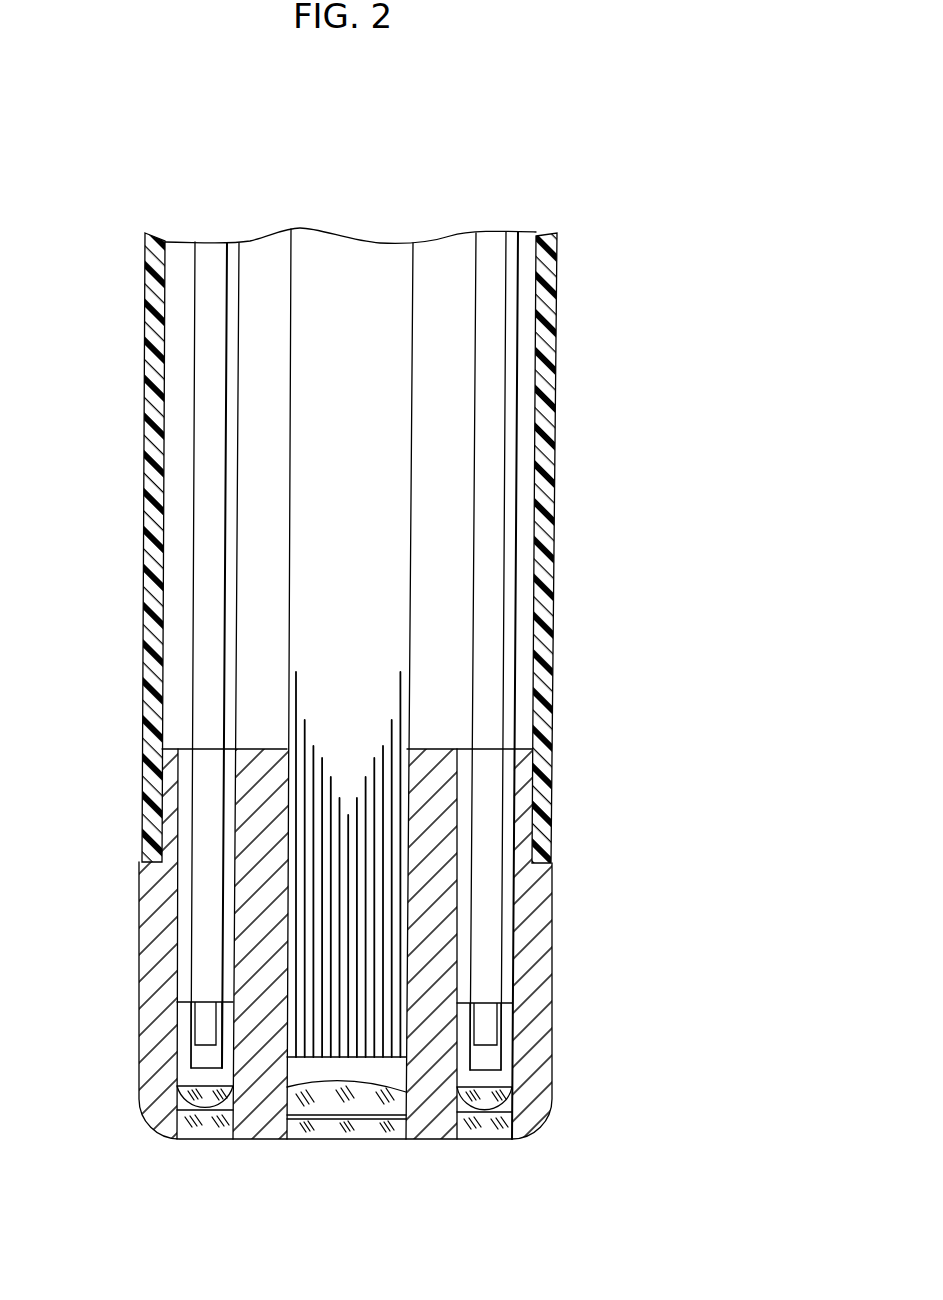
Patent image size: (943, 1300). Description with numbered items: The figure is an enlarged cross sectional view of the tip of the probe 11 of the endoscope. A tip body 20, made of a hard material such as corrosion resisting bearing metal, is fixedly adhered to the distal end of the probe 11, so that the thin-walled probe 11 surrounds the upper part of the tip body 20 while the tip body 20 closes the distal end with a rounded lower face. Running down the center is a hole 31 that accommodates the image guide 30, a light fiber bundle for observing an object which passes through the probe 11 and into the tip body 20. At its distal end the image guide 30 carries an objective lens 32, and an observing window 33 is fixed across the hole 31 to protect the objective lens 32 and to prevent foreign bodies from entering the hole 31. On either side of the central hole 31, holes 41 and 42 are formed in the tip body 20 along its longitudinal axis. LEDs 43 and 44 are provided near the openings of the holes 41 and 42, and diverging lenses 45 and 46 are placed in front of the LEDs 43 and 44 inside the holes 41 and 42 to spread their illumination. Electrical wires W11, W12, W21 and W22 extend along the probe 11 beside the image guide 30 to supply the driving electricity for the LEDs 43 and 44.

The probe 11 is at (559, 463).
The tip body 20 is at (557, 952).
The image guide 30 is at (315, 953).
The hole 31 is at (306, 1068).
The objective lens 32 is at (365, 1097).
The observing window 33 is at (328, 1128).
The hole 41 is at (158, 812).
The hole 42 is at (517, 818).
The LED 43 is at (203, 1098).
The LED 44 is at (482, 1102).
The diverging lens 45 is at (190, 1128).
The diverging lens 46 is at (468, 1123).
The electrical wire W11 is at (195, 522).
The electrical wire W12 is at (225, 572).
The electrical wire W21 is at (473, 574).
The electrical wire W22 is at (503, 520).